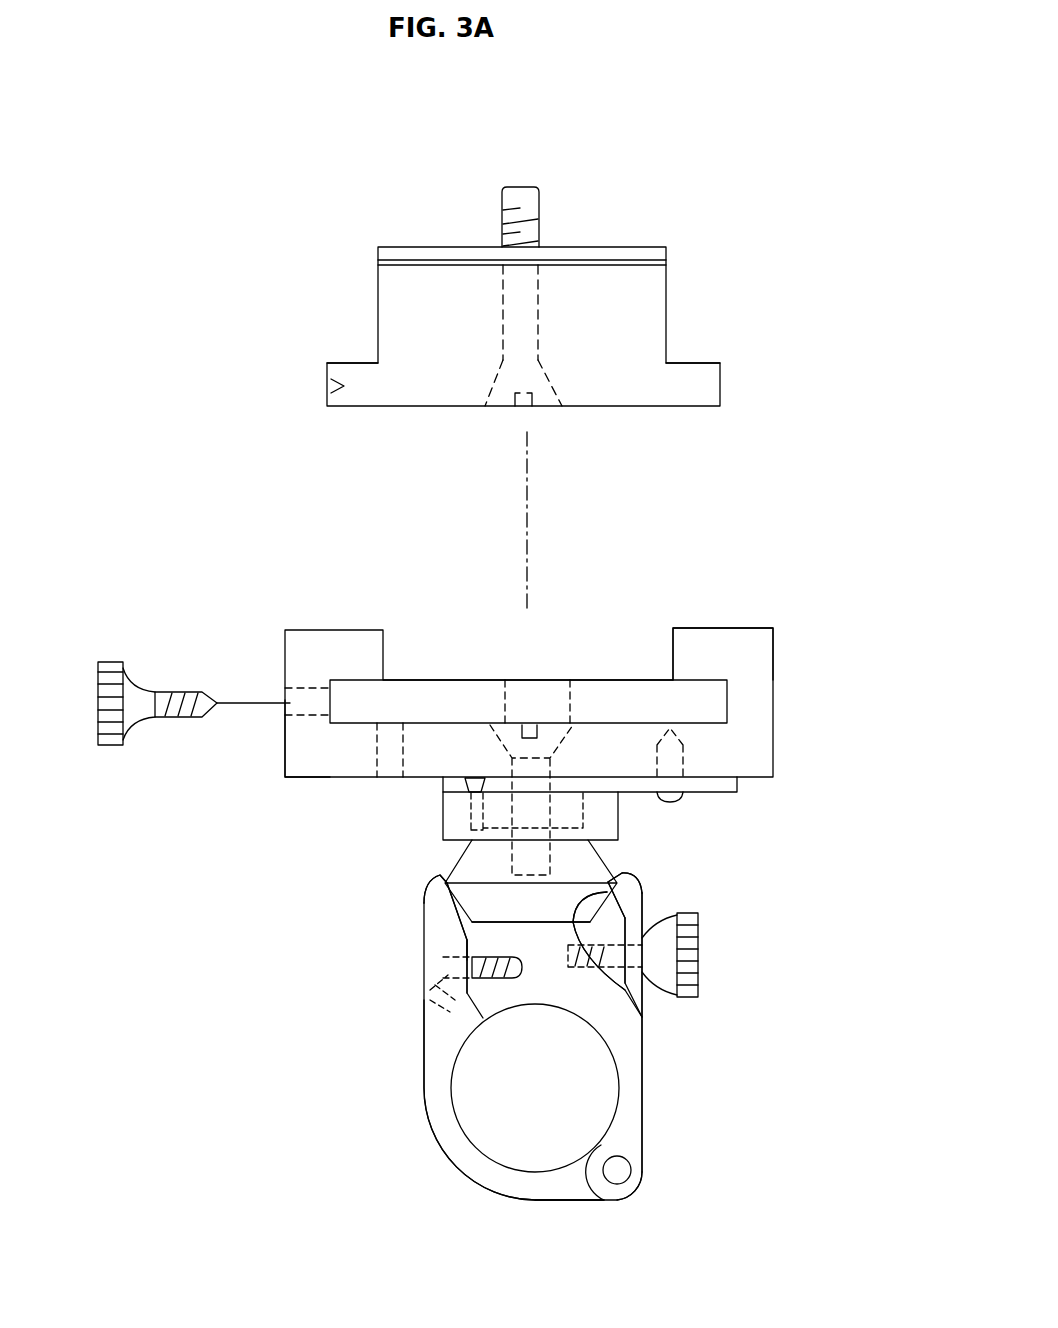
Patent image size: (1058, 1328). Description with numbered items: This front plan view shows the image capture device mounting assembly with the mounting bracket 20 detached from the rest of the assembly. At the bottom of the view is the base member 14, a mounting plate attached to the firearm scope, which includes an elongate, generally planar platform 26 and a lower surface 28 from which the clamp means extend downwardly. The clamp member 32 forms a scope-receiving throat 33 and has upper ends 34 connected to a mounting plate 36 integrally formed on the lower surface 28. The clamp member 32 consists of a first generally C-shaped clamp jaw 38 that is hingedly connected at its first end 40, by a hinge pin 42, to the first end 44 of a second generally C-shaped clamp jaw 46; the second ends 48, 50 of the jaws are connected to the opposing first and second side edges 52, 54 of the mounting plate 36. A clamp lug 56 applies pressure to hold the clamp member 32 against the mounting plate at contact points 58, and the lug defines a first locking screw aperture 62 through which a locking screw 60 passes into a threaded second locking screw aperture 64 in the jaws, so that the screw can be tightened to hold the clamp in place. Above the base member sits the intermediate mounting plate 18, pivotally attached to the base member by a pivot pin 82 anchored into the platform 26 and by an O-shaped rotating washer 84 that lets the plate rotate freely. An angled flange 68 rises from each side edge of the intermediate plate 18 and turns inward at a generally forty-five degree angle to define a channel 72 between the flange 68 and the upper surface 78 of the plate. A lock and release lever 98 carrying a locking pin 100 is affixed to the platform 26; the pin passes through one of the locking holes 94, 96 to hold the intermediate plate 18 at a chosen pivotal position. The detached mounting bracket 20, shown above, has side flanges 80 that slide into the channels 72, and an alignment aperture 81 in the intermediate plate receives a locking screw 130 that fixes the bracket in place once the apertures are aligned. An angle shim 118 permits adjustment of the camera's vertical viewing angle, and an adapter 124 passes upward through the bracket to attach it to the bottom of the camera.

The base member 14 is at (442, 830).
The intermediate mounting plate 18 is at (799, 630).
The mounting bracket 20 is at (684, 284).
The platform 26 is at (453, 810).
The lower surface 28 is at (318, 778).
The clamp member 32 is at (655, 1088).
The scope-receiving throat 33 is at (478, 1125).
The upper ends 34 is at (447, 910).
The mounting plate 36 is at (445, 872).
The first generally C-shaped clamp jaw 38 is at (428, 1062).
The first end 40 is at (566, 1188).
The hinge pin 42 is at (620, 1172).
The first end 44 is at (640, 1155).
The second generally C-shaped clamp jaw 46 is at (640, 1117).
The second end 48 is at (437, 945).
The second end 50 is at (605, 905).
The first side edge 52 is at (450, 912).
The second side edge 54 is at (640, 995).
The clamp lug 56 is at (630, 884).
The contact points 58 is at (610, 868).
The locking screw 60 is at (433, 975).
The first locking screw aperture 62 is at (430, 993).
The second locking screw aperture 64 is at (485, 960).
The angled flange 68 is at (722, 640).
The channel 72 is at (353, 692).
The upper surface 78 is at (458, 725).
The side flanges 80 is at (352, 363).
The alignment aperture 81 is at (284, 708).
The pivot pin 82 is at (507, 732).
The rotating washer 84 is at (590, 775).
The locking hole 94 is at (390, 735).
The locking hole 96 is at (662, 740).
The lock and release lever 98 is at (720, 793).
The locking pin 100 is at (672, 800).
The angle shim 118 is at (425, 258).
The adapter 124 is at (530, 222).
The locking screw 130 is at (140, 725).